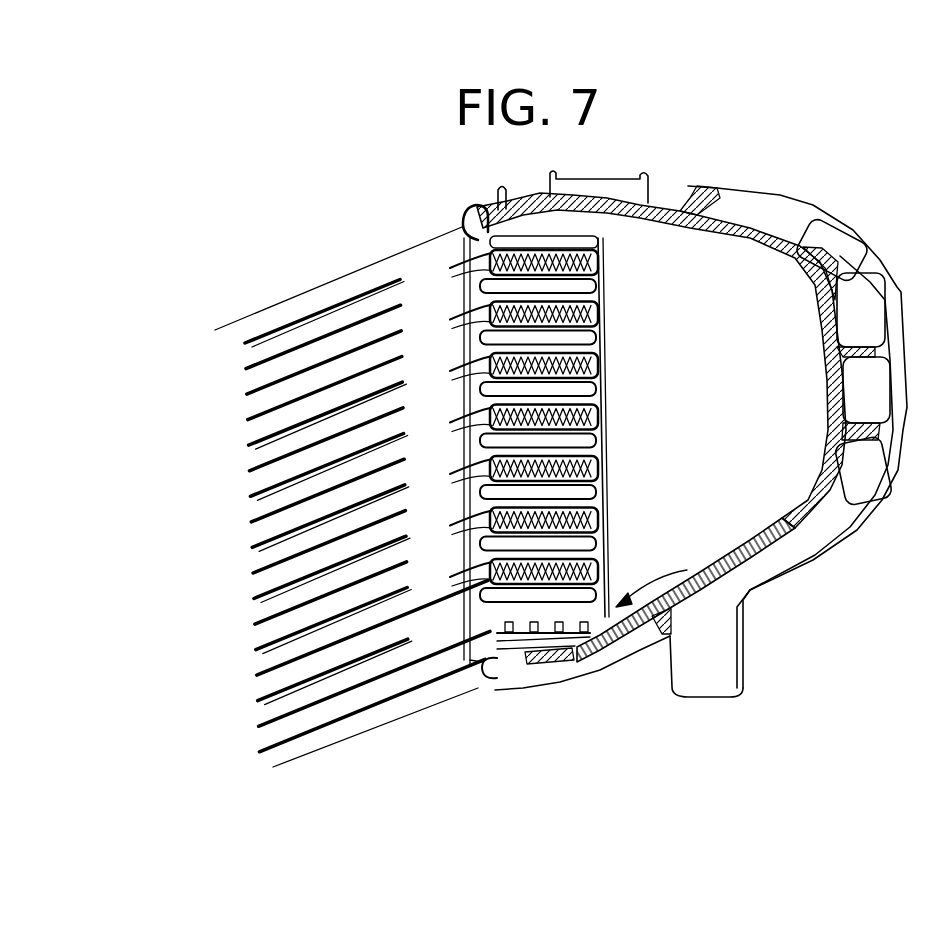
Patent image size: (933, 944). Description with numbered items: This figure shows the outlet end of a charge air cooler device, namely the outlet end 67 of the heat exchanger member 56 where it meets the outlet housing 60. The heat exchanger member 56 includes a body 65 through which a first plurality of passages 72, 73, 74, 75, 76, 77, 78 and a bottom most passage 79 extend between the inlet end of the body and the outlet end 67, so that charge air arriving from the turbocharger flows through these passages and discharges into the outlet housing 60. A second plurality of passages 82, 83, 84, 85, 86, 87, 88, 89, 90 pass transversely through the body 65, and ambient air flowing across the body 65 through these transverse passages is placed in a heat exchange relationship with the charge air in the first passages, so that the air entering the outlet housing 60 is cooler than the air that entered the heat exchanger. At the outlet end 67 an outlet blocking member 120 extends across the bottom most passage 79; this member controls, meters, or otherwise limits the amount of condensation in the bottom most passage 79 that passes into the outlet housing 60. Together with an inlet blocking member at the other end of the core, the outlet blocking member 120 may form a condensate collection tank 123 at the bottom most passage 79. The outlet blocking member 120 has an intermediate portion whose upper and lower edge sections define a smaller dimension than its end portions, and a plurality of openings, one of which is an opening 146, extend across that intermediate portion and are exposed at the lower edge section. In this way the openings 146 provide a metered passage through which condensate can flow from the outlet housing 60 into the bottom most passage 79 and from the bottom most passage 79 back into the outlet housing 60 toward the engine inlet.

The heat exchanger member 56 is at (266, 255).
The body 65 is at (375, 256).
The passage 72 is at (470, 258).
The passage 73 is at (470, 311).
The passage 74 is at (470, 364).
The passage 75 is at (470, 416).
The passage 76 is at (470, 468).
The passage 77 is at (470, 521).
The passage 78 is at (470, 573).
The passage 83 is at (257, 375).
The passage 84 is at (263, 423).
The passage 85 is at (265, 475).
The passage 86 is at (268, 527).
The passage 87 is at (273, 578).
The passage 88 is at (275, 629).
The passage 89 is at (278, 681).
The passage 90 is at (282, 734).
The passage 82 is at (478, 210).
The outlet end 67 is at (642, 432).
The outlet housing 60 is at (819, 567).
The outlet blocking member 120 is at (748, 612).
The opening 146 is at (556, 625).
The bottom most passage 79 is at (492, 623).
The condensate collection tank 123 is at (330, 697).